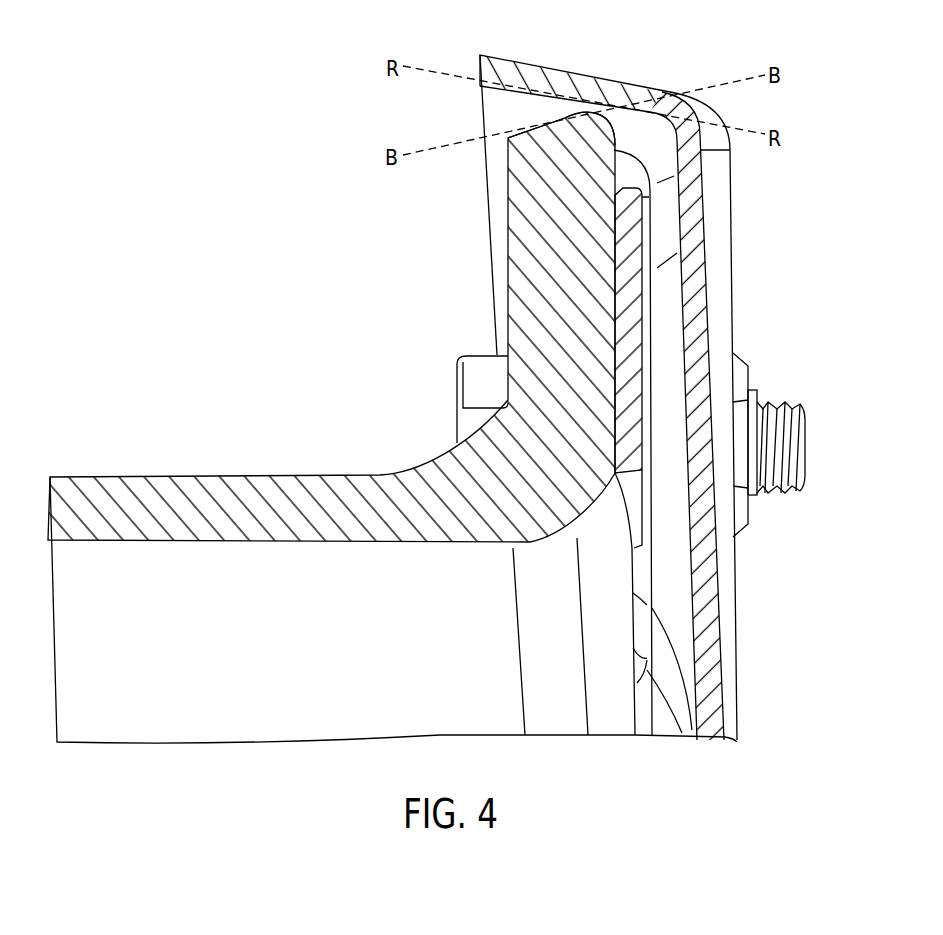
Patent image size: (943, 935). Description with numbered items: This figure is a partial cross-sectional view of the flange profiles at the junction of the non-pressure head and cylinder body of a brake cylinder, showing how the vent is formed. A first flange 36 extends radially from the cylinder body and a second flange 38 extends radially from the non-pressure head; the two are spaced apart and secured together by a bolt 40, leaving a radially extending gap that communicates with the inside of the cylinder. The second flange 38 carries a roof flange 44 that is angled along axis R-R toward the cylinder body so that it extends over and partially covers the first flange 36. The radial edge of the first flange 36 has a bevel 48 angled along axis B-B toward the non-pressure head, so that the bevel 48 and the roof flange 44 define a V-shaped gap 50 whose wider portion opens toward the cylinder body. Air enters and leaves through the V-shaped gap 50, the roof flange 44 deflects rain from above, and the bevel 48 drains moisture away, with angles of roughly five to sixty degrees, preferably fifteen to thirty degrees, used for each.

The first flange 36 is at (497, 274).
The second flange 38 is at (723, 298).
The bolt 40 is at (805, 442).
The roof flange 44 is at (580, 83).
The bevel 48 is at (546, 141).
The V-shaped gap 50 is at (440, 113).